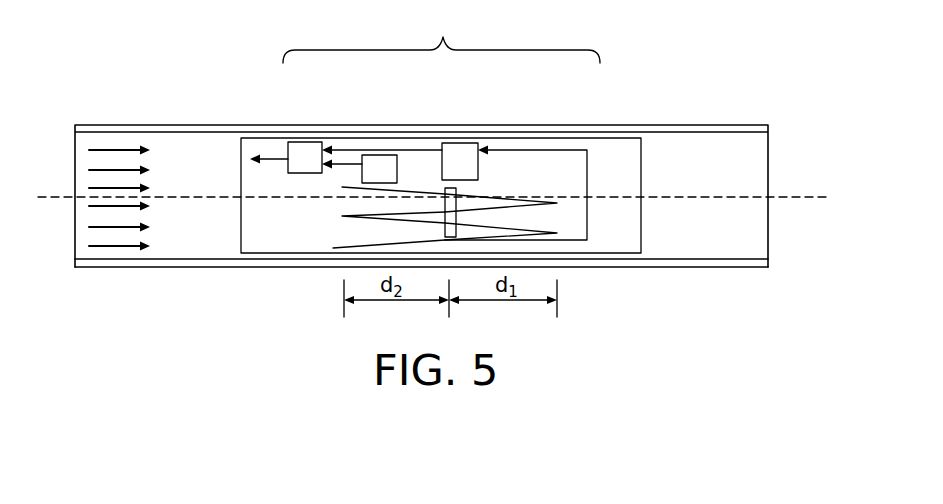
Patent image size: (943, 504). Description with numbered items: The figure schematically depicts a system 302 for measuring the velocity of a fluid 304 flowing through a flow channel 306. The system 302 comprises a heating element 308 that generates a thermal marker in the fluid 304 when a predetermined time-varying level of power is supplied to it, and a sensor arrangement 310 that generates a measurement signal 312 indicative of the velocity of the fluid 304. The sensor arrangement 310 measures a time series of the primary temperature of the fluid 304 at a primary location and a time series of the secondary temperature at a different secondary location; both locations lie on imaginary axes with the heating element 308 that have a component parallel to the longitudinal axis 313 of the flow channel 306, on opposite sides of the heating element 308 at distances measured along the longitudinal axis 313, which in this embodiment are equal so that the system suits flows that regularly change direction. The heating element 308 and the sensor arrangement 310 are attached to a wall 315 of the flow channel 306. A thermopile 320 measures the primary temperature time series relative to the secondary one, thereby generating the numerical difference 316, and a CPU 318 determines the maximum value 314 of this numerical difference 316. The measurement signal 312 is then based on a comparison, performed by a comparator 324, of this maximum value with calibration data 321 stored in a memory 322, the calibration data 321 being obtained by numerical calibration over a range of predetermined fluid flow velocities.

The system 302 is at (283, 228).
The fluid 304 is at (222, 173).
The flow channel 306 is at (732, 268).
The heating element 308 is at (525, 230).
The sensor arrangement 310 is at (441, 36).
The measurement signal 312 is at (259, 154).
The longitudinal axis 313 is at (810, 197).
The maximum value 314 is at (355, 150).
The wall 315 is at (148, 268).
The numerical difference 316 is at (530, 150).
The CPU 318 is at (459, 149).
The thermopile 320 is at (335, 248).
The calibration data 321 is at (342, 164).
The memory 322 is at (380, 162).
The comparator 324 is at (305, 150).